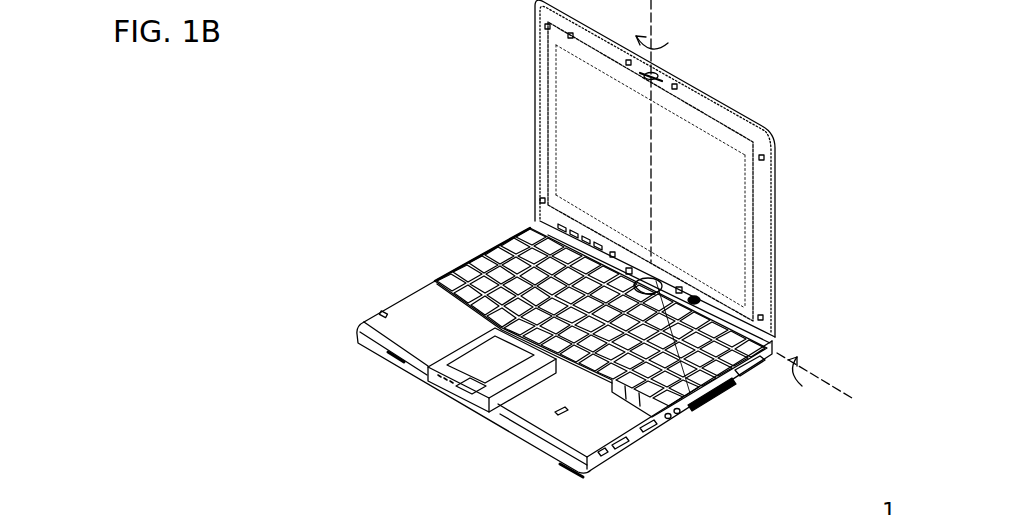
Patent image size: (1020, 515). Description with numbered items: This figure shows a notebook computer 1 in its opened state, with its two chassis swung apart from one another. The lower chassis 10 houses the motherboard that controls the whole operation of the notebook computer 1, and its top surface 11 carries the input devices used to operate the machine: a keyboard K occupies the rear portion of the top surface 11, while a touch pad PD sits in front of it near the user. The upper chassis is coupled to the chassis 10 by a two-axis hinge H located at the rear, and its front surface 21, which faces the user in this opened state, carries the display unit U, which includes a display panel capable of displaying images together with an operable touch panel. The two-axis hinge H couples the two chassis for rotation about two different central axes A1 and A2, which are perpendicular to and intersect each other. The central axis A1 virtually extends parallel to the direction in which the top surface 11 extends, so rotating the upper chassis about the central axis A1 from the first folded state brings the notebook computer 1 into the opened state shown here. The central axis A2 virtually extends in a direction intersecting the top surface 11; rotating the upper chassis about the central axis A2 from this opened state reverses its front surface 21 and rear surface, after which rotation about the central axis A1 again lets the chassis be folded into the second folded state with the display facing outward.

The notebook computer 1 is at (795, 80).
The chassis 10 is at (582, 470).
The top surface 11 is at (423, 304).
The front surface 21 is at (540, 131).
The display unit U is at (567, 117).
The keyboard K is at (497, 263).
The touch pad PD is at (498, 353).
The two-axis hinge H is at (722, 400).
The central axis A1 is at (822, 388).
The central axis A2 is at (660, 26).